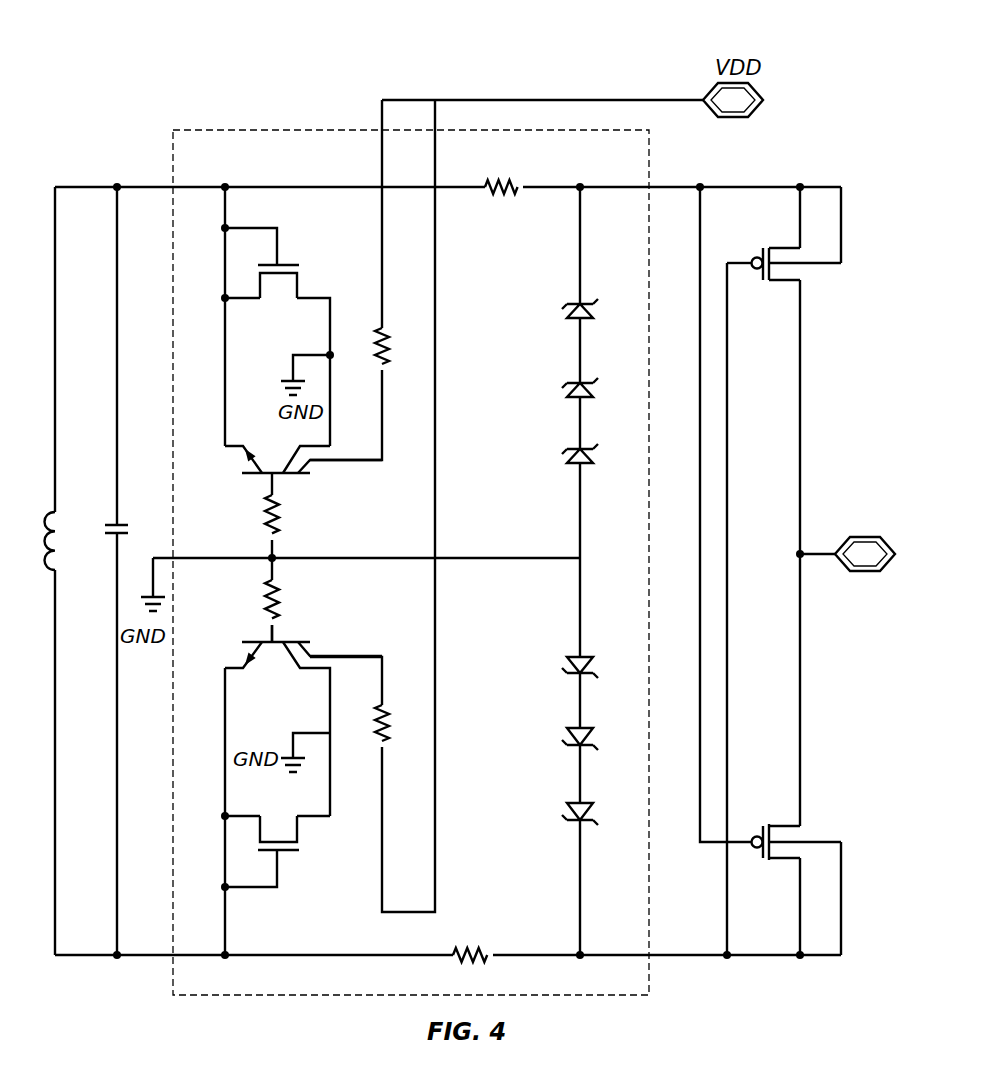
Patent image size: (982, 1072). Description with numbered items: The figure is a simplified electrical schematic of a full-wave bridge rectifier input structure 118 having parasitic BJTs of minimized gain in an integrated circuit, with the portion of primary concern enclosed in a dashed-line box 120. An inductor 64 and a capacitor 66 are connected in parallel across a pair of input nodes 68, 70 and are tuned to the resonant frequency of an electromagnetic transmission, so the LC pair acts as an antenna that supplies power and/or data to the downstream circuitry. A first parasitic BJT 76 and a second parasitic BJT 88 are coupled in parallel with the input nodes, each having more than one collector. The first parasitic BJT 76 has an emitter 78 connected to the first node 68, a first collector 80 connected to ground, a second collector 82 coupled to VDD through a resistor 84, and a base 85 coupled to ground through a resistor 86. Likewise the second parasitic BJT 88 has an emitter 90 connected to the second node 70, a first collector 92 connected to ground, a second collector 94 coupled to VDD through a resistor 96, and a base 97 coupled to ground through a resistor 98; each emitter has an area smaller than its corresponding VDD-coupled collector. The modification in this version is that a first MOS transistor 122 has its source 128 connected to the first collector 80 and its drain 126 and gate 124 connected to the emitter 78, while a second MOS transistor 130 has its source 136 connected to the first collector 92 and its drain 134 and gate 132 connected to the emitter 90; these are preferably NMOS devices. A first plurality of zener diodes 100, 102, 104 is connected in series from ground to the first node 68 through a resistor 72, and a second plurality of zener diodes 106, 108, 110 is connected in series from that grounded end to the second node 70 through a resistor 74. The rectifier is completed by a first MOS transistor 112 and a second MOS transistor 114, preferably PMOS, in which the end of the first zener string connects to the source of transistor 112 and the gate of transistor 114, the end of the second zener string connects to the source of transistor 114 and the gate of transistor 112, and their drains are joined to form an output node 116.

The inductor 64 is at (50, 524).
The capacitor 66 is at (122, 522).
The first input node 68 is at (117, 186).
The second input node 70 is at (115, 957).
The resistor 72 is at (514, 186).
The resistor 74 is at (482, 950).
The first parasitic BJT 76 is at (364, 499).
The emitter 78 is at (253, 458).
The first collector 80 is at (292, 456).
The second collector 82 is at (372, 461).
The resistor 84 is at (382, 327).
The base 85 is at (268, 486).
The resistor 86 is at (278, 508).
The second parasitic BJT 88 is at (344, 600).
The emitter 90 is at (252, 660).
The first collector 92 is at (294, 664).
The second collector 94 is at (345, 656).
The resistor 96 is at (381, 707).
The base 97 is at (275, 635).
The resistor 98 is at (262, 594).
The zener diode 100 is at (570, 313).
The zener diode 102 is at (570, 392).
The zener diode 104 is at (570, 458).
The zener diode 106 is at (570, 657).
The zener diode 108 is at (570, 732).
The zener diode 110 is at (570, 805).
The first MOS transistor 112 is at (788, 246).
The second MOS transistor 114 is at (794, 825).
The output node 116 is at (866, 573).
The FWBR input structure 118 is at (215, 53).
The dashed-line box 120 is at (305, 128).
The first MOS transistor 122 is at (335, 200).
The gate 124 is at (280, 263).
The drain 126 is at (229, 300).
The source 128 is at (313, 297).
The second MOS transistor 130 is at (301, 904).
The gate 132 is at (290, 852).
The drain 134 is at (238, 815).
The source 136 is at (313, 818).